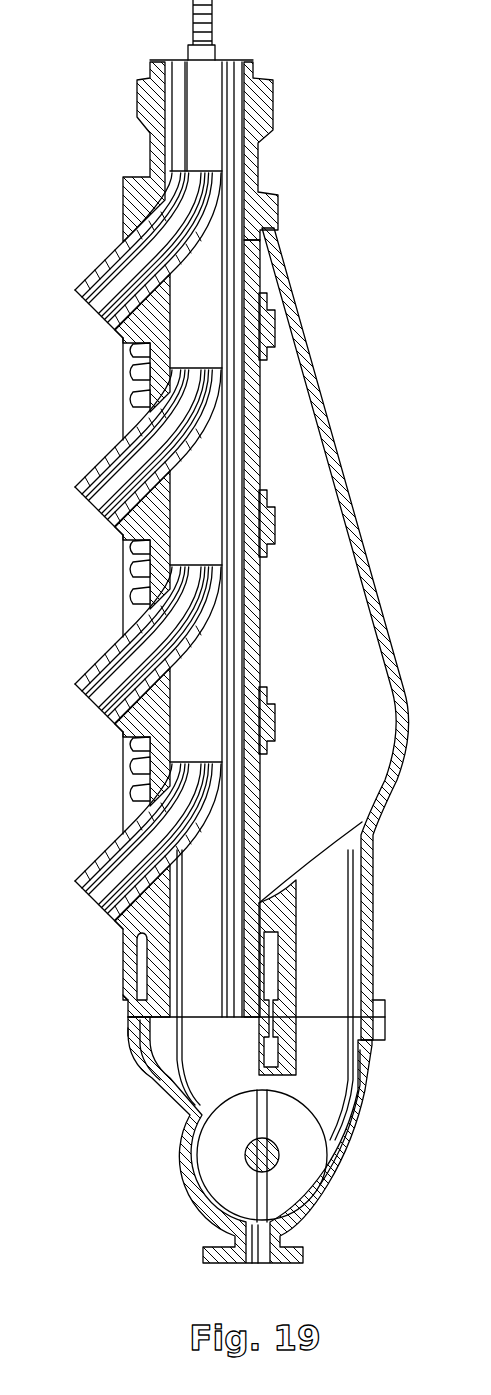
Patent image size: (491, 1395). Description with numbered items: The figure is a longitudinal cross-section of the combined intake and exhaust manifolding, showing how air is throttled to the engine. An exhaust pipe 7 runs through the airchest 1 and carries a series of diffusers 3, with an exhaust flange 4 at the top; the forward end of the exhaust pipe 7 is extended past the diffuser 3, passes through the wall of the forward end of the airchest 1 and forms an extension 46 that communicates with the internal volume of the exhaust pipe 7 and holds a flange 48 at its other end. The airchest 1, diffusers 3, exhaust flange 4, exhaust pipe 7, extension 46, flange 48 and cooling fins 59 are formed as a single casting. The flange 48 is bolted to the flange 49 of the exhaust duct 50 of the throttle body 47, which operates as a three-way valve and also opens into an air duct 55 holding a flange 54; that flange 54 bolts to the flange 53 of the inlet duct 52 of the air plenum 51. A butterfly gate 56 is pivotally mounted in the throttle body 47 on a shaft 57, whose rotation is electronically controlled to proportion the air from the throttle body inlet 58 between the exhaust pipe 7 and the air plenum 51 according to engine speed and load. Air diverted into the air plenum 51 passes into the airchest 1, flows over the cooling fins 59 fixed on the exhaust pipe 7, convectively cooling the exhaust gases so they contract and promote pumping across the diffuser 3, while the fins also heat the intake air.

The airchest 1 is at (130, 178).
The diffuser 3 is at (103, 265).
The exhaust flange 4 is at (271, 99).
The exhaust pipe 7 is at (213, 680).
The extension 46 is at (187, 960).
The throttle body 47 is at (180, 1173).
The flange 48 is at (128, 1010).
The flange 49 is at (128, 1034).
The exhaust duct 50 is at (143, 1067).
The air plenum 51 is at (390, 797).
The inlet duct 52 is at (337, 943).
The flange 53 is at (387, 1003).
The flange 54 is at (387, 1023).
The air duct 55 is at (372, 1093).
The butterfly gate 56 is at (265, 1197).
The shaft 57 is at (277, 1157).
The throttle body inlet 58 is at (257, 1245).
The cooling fins 59 is at (128, 398).